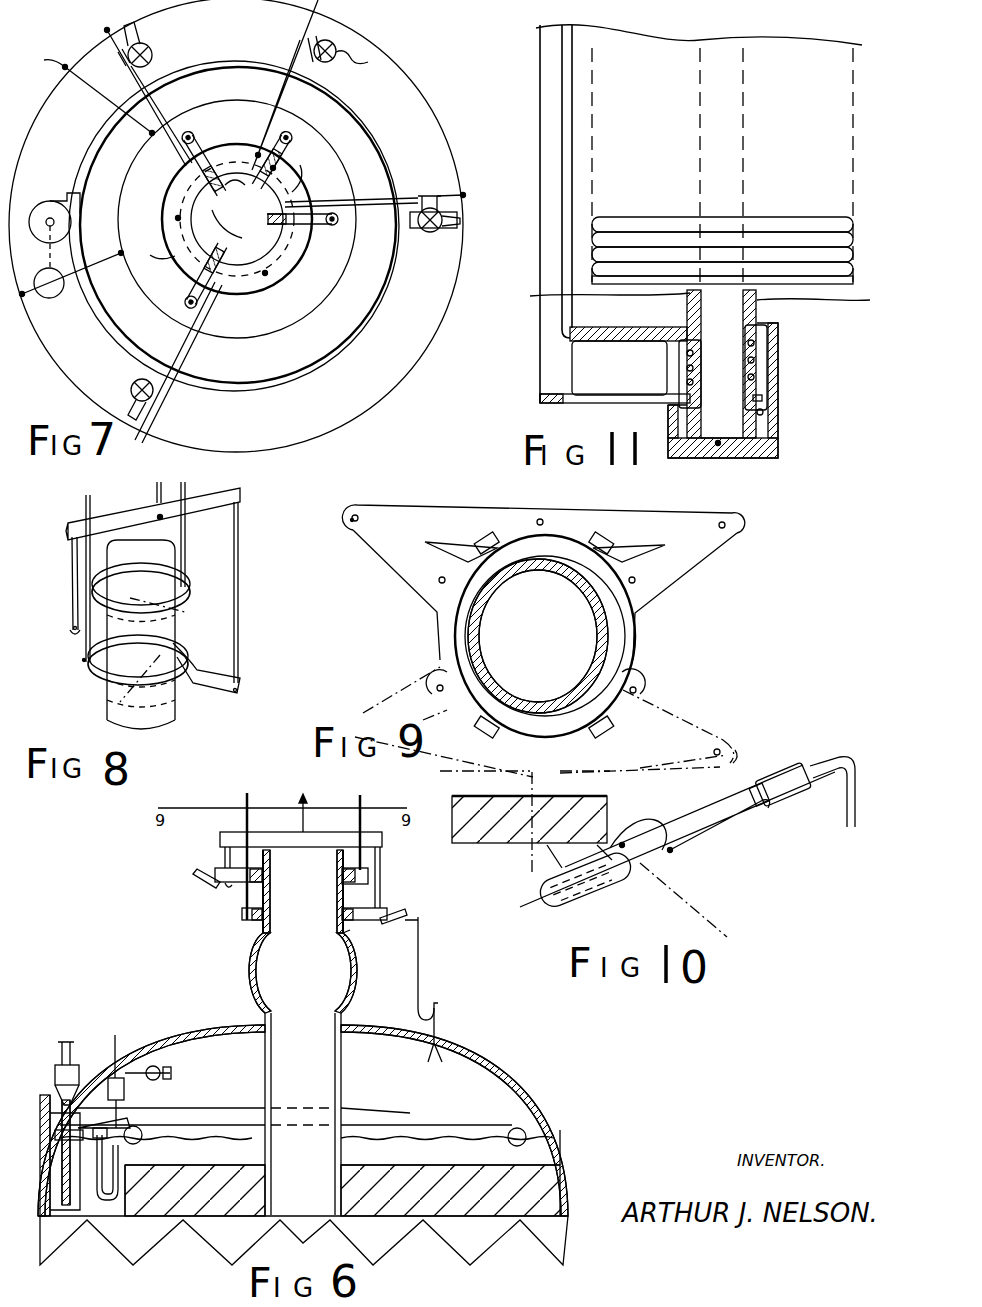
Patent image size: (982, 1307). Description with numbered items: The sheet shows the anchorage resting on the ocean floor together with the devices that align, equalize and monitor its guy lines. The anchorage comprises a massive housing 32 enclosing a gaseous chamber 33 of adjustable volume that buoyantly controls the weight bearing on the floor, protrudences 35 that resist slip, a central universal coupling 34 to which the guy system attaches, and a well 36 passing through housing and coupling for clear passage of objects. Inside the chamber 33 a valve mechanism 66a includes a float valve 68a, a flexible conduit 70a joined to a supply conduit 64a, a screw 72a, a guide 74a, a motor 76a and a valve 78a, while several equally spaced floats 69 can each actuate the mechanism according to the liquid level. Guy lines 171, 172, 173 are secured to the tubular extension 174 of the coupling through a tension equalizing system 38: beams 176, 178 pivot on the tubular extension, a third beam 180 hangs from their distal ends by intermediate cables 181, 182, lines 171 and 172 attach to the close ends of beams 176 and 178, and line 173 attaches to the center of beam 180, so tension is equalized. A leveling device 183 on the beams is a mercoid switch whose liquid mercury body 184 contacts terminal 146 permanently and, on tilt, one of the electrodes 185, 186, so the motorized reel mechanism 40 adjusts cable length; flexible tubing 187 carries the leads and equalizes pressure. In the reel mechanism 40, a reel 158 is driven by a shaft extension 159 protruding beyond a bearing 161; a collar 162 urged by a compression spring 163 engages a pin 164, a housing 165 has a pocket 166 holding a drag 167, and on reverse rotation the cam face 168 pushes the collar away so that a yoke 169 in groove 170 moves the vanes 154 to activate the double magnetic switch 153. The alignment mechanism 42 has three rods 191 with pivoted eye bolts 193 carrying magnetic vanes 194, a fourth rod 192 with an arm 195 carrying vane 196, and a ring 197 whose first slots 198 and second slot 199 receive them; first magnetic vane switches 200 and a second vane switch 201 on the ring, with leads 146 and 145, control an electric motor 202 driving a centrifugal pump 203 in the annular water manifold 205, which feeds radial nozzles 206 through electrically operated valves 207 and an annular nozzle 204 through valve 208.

In FIG. 6, the housing 32 is at (515, 1074).
In FIG. 6, the gaseous chamber 33 is at (470, 1112).
In FIG. 6, the universal coupling 34 is at (258, 970).
In FIG. 6, the protrudences 35 is at (122, 1250).
In FIG. 8, the well 36 is at (146, 634).
In FIG. 9, the well 36 is at (533, 620).
In FIG. 6, the well 36 is at (302, 938).
In FIG. 9, the tension equalizing system 38 is at (290, 700).
In FIG. 11, the motorized reel mechanism 40 is at (530, 27).
In FIG. 7, the alignment mechanism 42 is at (440, 80).
In FIG. 6, the supply conduit 64a is at (118, 1035).
In FIG. 6, the valve mechanism 66a is at (190, 1128).
In FIG. 6, the float valve 68a is at (108, 1118).
In FIG. 6, the floats 69 is at (513, 1143).
In FIG. 6, the flexible conduit 70a is at (120, 1152).
In FIG. 6, the screw 72a is at (48, 1098).
In FIG. 6, the guide 74a is at (56, 1075).
In FIG. 6, the motor 76a is at (60, 1050).
In FIG. 6, the valve 78a is at (173, 1074).
In FIG. 7, the second electrical lead 145 is at (53, 50).
In FIG. 7, the first electrical lead 146 is at (66, 14).
In FIG. 10, the first electrical lead 146 is at (505, 873).
In FIG. 11, the double magnetic switch 153 is at (540, 357).
In FIG. 11, the vanes 154 is at (540, 396).
In FIG. 11, the reel 158 is at (830, 281).
In FIG. 11, the shaft extension 159 is at (745, 148).
In FIG. 11, the bearing 161 is at (750, 318).
In FIG. 11, the collar 162 is at (768, 366).
In FIG. 11, the compression spring 163 is at (755, 350).
In FIG. 11, the pin 164 is at (718, 445).
In FIG. 11, the housing 165 is at (778, 440).
In FIG. 11, the pocket 166 is at (768, 414).
In FIG. 11, the drag 167 is at (763, 393).
In FIG. 11, the cam face 168 is at (706, 440).
In FIG. 11, the yoke 169 is at (625, 392).
In FIG. 11, the groove 170 is at (688, 378).
In FIG. 7, the guy line 171 is at (275, 166).
In FIG. 8, the guy line 171 is at (86, 500).
In FIG. 9, the guy line 171 is at (437, 666).
In FIG. 6, the guy line 171 is at (251, 844).
In FIG. 7, the guy line 172 is at (266, 277).
In FIG. 8, the guy line 172 is at (185, 485).
In FIG. 9, the guy line 172 is at (641, 678).
In FIG. 6, the guy line 172 is at (369, 819).
In FIG. 7, the guy line 173 is at (177, 219).
In FIG. 8, the guy line 173 is at (157, 490).
In FIG. 9, the guy line 173 is at (543, 521).
In FIG. 6, the guy line 173 is at (309, 800).
In FIG. 9, the tubular extension 174 is at (598, 628).
In FIG. 6, the tubular extension 174 is at (346, 935).
In FIG. 8, the beam 176 is at (200, 670).
In FIG. 9, the beam 176 is at (702, 562).
In FIG. 10, the beam 176 is at (600, 776).
In FIG. 6, the beam 176 is at (250, 922).
In FIG. 8, the beam 178 is at (186, 598).
In FIG. 9, the beam 178 is at (400, 578).
In FIG. 10, the beam 178 is at (604, 794).
In FIG. 6, the beam 178 is at (280, 892).
In FIG. 8, the third beam 180 is at (242, 492).
In FIG. 9, the third beam 180 is at (442, 488).
In FIG. 6, the third beam 180 is at (228, 832).
In FIG. 8, the intermediate cable 181 is at (240, 536).
In FIG. 9, the intermediate cable 181 is at (726, 528).
In FIG. 8, the intermediate cable 182 is at (70, 570).
In FIG. 9, the intermediate cable 182 is at (372, 500).
In FIG. 6, the intermediate cable 182 is at (225, 855).
In FIG. 10, the leveling device 183 is at (490, 920).
In FIG. 6, the leveling device 183 is at (413, 915).
In FIG. 10, the liquid mercury body 184 is at (620, 880).
In FIG. 10, the electrode 185 is at (678, 857).
In FIG. 6, the electrode 185 is at (428, 1052).
In FIG. 10, the electrode 186 is at (655, 840).
In FIG. 6, the electrode 186 is at (440, 1062).
In FIG. 10, the flexible tubing 187 is at (787, 762).
In FIG. 6, the flexible tubing 187 is at (420, 970).
In FIG. 7, the rods 191 is at (178, 120).
In FIG. 7, the fourth rod 192 is at (285, 128).
In FIG. 7, the eye bolts 193 is at (318, 233).
In FIG. 7, the magnetic vane 194 is at (250, 240).
In FIG. 7, the arm 195 is at (290, 140).
In FIG. 7, the magnetic vane 196 is at (241, 186).
In FIG. 7, the ring 197 is at (165, 255).
In FIG. 7, the first slot 198 is at (200, 146).
In FIG. 7, the second slot 199 is at (290, 183).
In FIG. 7, the first magnetic vane switches 200 is at (184, 173).
In FIG. 7, the second vane switch 201 is at (268, 103).
In FIG. 7, the electric motor 202 is at (50, 294).
In FIG. 7, the centrifugal pump 203 is at (30, 215).
In FIG. 7, the annularly extending nozzle 204 is at (365, 64).
In FIG. 7, the water manifold 205 is at (248, 404).
In FIG. 7, the nozzles 206 is at (142, 16).
In FIG. 7, the electrically operated valve 207 is at (156, 38).
In FIG. 7, the electrically operated valve 208 is at (292, 85).